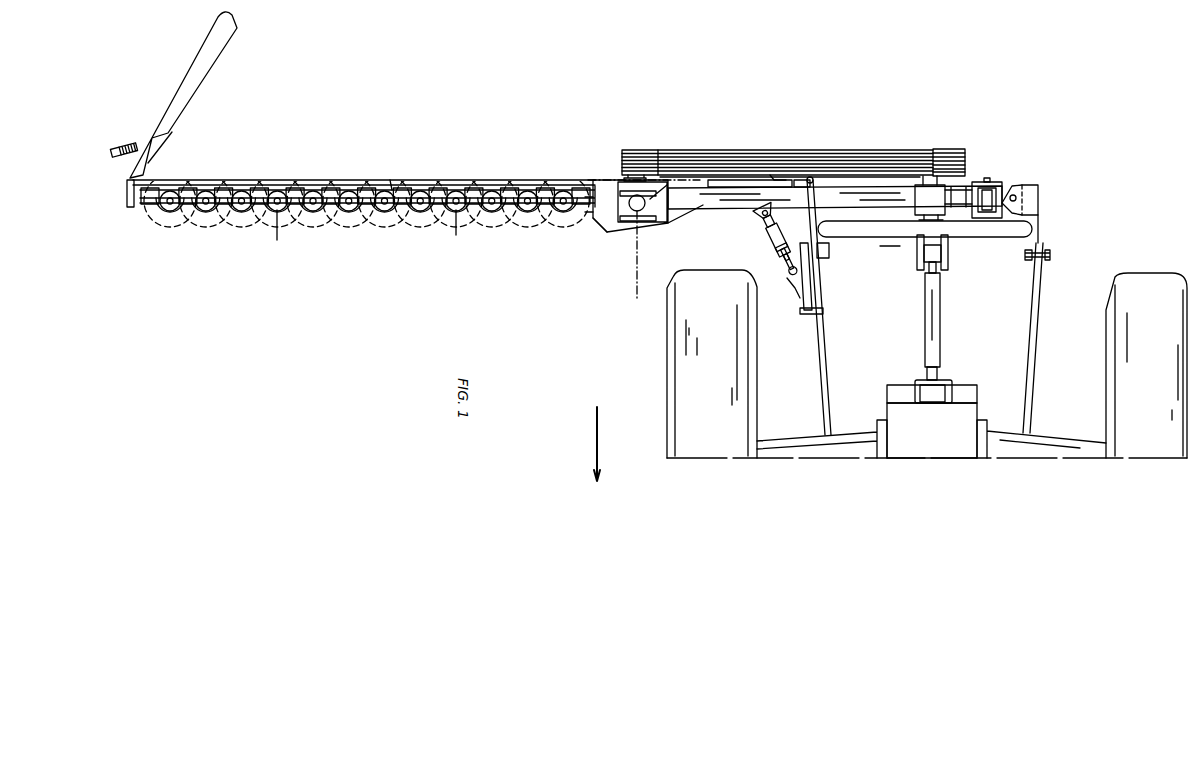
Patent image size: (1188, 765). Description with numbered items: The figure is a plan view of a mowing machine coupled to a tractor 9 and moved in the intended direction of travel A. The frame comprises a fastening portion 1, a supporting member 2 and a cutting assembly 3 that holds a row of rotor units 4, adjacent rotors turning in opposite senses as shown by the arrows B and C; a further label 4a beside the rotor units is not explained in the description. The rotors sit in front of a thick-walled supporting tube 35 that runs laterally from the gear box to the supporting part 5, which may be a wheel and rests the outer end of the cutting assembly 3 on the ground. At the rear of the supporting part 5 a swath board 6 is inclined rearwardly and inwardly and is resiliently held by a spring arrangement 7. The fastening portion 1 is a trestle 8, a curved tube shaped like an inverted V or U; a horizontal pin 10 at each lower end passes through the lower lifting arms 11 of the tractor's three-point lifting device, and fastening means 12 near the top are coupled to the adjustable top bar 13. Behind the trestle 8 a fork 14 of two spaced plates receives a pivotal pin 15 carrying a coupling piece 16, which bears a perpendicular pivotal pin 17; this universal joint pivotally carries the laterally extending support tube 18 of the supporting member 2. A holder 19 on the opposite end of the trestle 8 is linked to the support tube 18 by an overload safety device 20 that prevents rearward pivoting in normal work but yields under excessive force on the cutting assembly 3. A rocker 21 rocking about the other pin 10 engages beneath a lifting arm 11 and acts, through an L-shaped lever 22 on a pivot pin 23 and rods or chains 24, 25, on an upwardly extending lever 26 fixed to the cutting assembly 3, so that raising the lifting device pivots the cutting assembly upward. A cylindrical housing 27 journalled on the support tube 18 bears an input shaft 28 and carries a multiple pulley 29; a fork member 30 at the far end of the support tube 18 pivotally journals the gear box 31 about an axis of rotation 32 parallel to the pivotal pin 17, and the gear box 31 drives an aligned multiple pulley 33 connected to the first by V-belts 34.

The fastening portion 1 is at (890, 246).
The supporting member 2 is at (724, 214).
The cutting assembly 3 is at (481, 171).
The rotor units 4 is at (247, 232).
The roller axles 4a is at (277, 240).
The supporting part 5 is at (125, 192).
The swath board 6 is at (223, 67).
The spring arrangement 7 is at (129, 143).
The trestle 8 is at (855, 237).
The tractor 9 is at (658, 390).
The horizontal pin 10 is at (1052, 255).
The lower lifting arms 11 is at (830, 372).
The fastening means 12 is at (948, 262).
The top bar 13 is at (940, 330).
The fork 14 is at (1040, 198).
The pivotal pin 15 is at (1019, 185).
The coupling piece 16 is at (1000, 220).
The pivotal pin 17 is at (987, 178).
The support tube 18 is at (960, 210).
The holder 19 is at (794, 288).
The overload safety device 20 is at (768, 236).
The rocker 21 is at (824, 305).
The L-shaped lever 22 is at (774, 179).
The pivot pin 23 is at (716, 179).
The rods or chains 24 is at (797, 179).
The rods or chains 25 is at (697, 171).
The upwardly extending lever 26 is at (592, 184).
The cylindrical housing 27 is at (926, 195).
The input shaft 28 is at (898, 262).
The multiple pulley 29 is at (946, 149).
The fork member 30 is at (672, 212).
The gear box 31 is at (602, 236).
The axis of rotation 32 is at (640, 252).
The multiple pulley 33 is at (650, 150).
The V-belts 34 is at (828, 165).
The supporting tube 35 is at (390, 180).
The intended direction of travel A is at (598, 437).
The direction of rotation arrow B is at (220, 240).
The direction of rotation arrow C is at (168, 236).